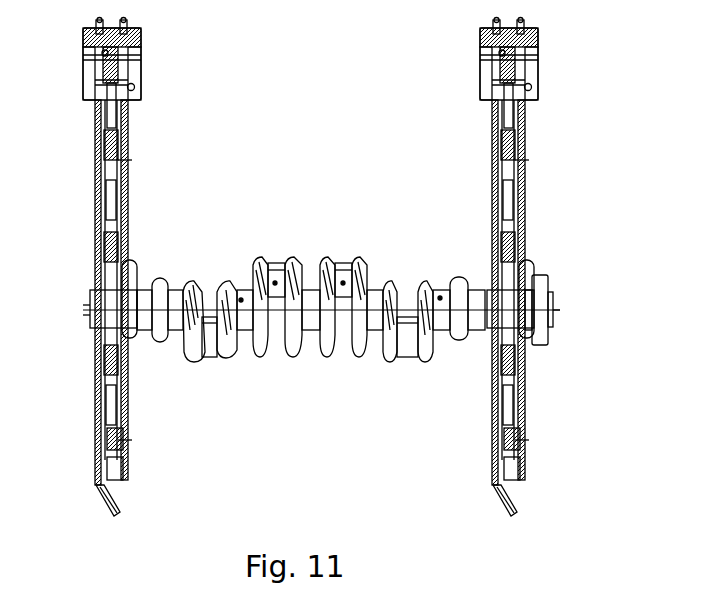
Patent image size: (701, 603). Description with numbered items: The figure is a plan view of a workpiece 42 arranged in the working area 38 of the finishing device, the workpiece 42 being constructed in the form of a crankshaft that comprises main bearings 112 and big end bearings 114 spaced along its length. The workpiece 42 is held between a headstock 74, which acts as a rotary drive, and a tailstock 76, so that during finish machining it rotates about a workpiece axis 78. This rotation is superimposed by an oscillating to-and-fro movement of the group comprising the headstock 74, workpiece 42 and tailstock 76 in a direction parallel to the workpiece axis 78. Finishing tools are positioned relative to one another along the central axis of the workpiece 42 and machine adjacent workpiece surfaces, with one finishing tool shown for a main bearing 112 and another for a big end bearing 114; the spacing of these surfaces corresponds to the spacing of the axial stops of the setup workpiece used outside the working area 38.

The working area 38 is at (338, 508).
The workpiece 42 is at (334, 296).
The headstock 74 is at (69, 326).
The tailstock 76 is at (606, 326).
The workpiece axis 78 is at (370, 274).
The main bearings 112 is at (178, 283).
The big end bearings 114 is at (212, 345).